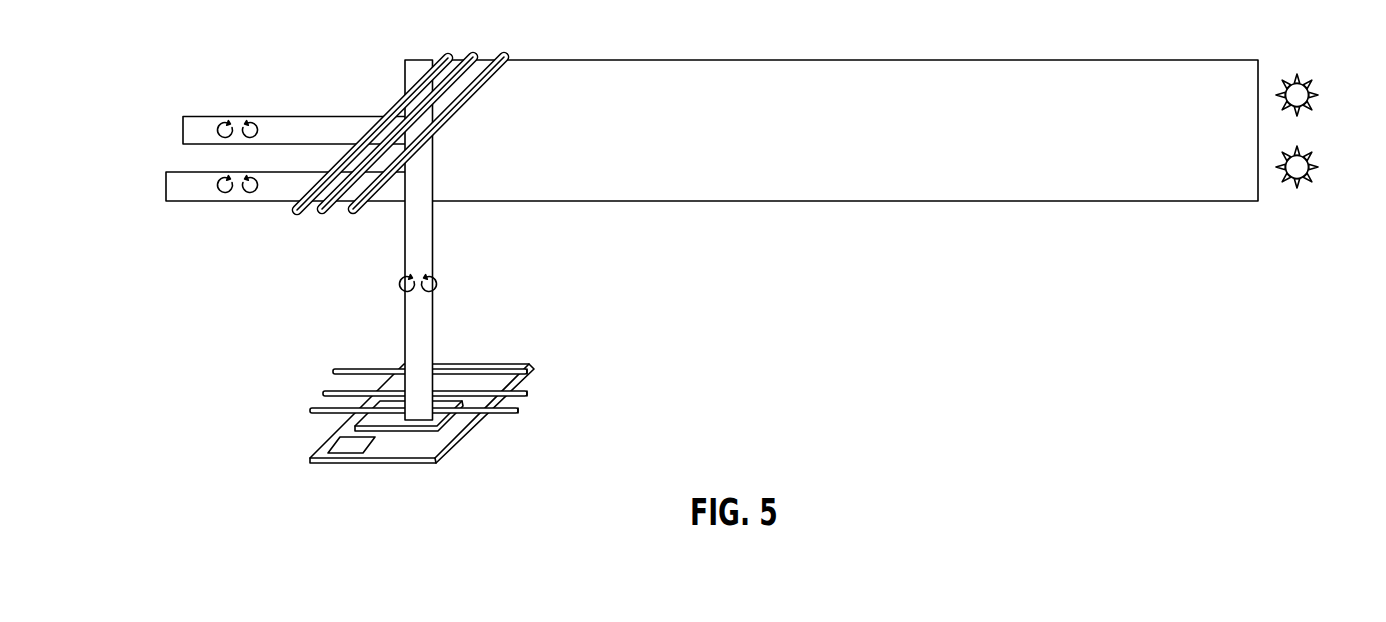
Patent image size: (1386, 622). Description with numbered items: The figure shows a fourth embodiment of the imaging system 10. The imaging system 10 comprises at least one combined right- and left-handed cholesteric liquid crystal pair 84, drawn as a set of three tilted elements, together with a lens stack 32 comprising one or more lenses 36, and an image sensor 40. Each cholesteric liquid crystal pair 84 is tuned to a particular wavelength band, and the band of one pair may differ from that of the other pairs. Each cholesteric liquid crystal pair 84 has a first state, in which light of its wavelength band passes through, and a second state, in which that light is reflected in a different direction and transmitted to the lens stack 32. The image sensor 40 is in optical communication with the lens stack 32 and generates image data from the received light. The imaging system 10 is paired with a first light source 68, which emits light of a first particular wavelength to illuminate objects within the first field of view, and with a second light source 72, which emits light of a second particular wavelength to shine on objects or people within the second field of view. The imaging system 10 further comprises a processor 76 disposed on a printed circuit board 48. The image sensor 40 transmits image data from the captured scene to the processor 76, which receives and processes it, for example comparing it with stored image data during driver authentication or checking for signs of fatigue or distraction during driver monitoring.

The imaging system 10 is at (702, 259).
The combined right- and left-handed cholesteric liquid crystal pair 84 is at (498, 60).
The first light source 68 is at (1314, 93).
The second light source 72 is at (1314, 165).
The lens stack 32 is at (333, 357).
The lenses 36 is at (538, 371).
The processor 76 is at (340, 447).
The printed circuit board 48 is at (417, 448).
The image sensor 40 is at (432, 425).